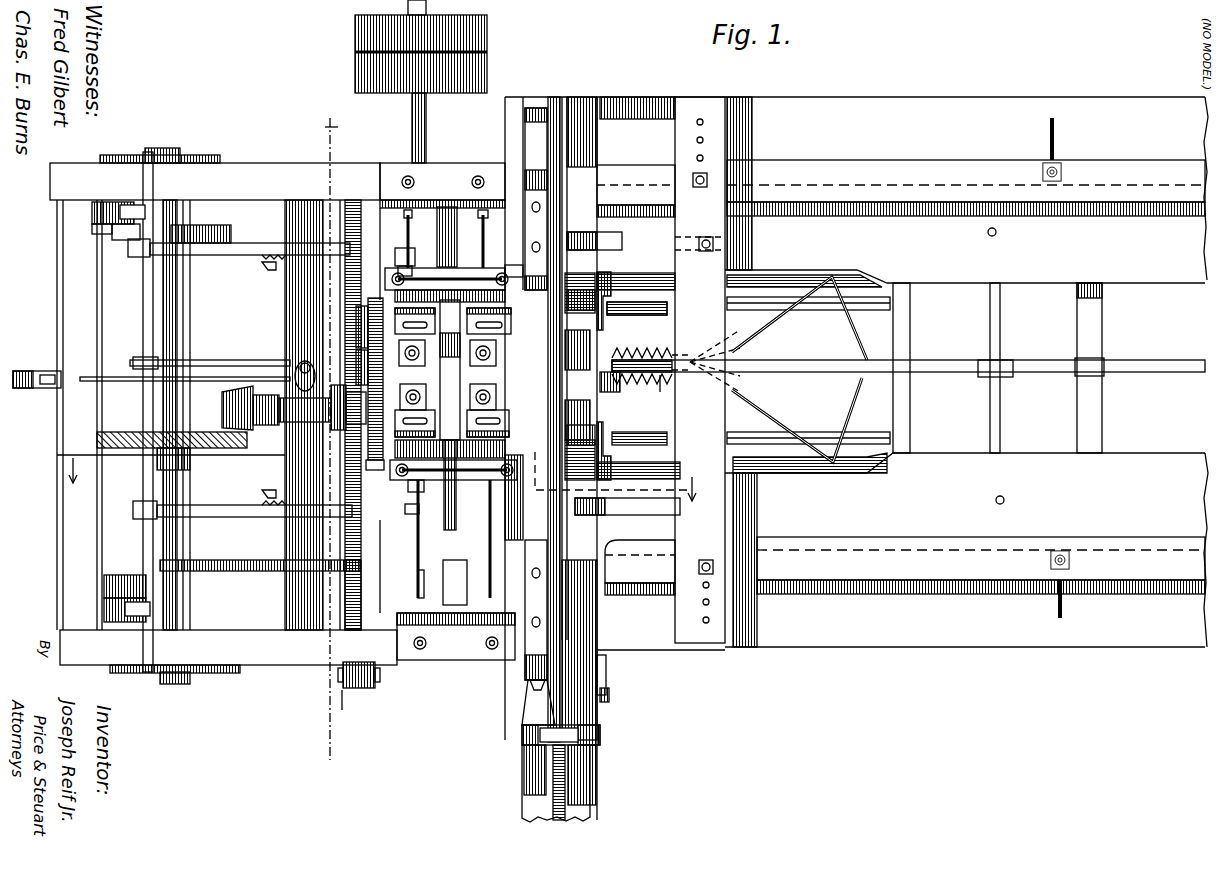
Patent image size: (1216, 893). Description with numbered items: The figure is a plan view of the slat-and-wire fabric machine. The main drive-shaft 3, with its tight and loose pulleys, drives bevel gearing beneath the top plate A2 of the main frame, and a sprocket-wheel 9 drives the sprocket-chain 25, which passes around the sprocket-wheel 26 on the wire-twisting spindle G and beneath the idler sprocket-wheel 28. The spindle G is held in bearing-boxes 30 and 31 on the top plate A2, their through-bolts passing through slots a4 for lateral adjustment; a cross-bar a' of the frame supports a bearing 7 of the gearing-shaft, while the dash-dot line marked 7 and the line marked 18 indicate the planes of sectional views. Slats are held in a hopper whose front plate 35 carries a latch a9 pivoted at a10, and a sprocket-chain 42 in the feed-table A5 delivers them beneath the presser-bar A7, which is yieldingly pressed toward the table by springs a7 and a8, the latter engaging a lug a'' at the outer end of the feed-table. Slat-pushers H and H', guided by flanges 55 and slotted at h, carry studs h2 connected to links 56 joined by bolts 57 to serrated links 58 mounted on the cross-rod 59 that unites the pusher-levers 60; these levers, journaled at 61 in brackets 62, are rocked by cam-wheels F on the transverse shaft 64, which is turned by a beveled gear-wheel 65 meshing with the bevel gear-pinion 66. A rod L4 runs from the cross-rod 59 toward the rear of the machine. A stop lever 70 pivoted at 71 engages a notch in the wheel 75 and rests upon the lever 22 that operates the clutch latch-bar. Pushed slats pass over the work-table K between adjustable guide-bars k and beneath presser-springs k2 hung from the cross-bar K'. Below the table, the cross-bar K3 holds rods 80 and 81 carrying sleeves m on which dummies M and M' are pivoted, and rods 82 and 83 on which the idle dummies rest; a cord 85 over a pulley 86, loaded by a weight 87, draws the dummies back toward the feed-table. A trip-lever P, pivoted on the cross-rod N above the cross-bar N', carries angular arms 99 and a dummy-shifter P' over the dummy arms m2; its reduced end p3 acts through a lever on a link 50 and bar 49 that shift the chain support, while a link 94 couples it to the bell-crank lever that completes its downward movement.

The work-table K is at (966, 354).
The guide-bars k is at (989, 368).
The rod 83 is at (865, 275).
The rod 81 is at (823, 311).
The rod 80 is at (828, 432).
The rod 82 is at (778, 474).
The angular arm 99 is at (776, 330).
The trip-lever P is at (908, 356).
The cross-bar K3 is at (912, 428).
The cross-rod N is at (1006, 368).
The cross-bar N' is at (1101, 368).
The cross-bar K' is at (700, 370).
The section line 18 is at (379, 479).
The main drive-shaft 3 is at (430, 131).
The pivot 71 is at (380, 678).
The bearing 7 is at (297, 368).
The cross-rod 59 is at (146, 490).
The transverse shaft 64 is at (178, 319).
The pusher-levers 60 is at (128, 205).
The brackets 62 is at (100, 236).
The journal 61 is at (107, 236).
The cam-wheel F is at (226, 236).
The link 58 is at (232, 255).
The bolt 57 is at (268, 271).
The rod L4 is at (205, 362).
The cord 85 is at (210, 381).
The beveled gear-wheel 65 is at (226, 450).
The beveled gear-pinion 66 is at (244, 392).
The wheel 75 is at (350, 370).
The sprocket-chain 25 is at (366, 312).
The idler sprocket-wheel 28 is at (366, 345).
The weight 87 is at (22, 370).
The pulley 86 is at (38, 390).
The lever 22 is at (270, 572).
The lever 70 is at (358, 594).
The link 56 is at (380, 513).
The sprocket-wheel 26 is at (381, 470).
The bearing-box 30 is at (415, 372).
The bearing-box 31 is at (489, 372).
The cross-bar a' is at (450, 370).
The wire-twisting spindle G is at (455, 440).
The slots h is at (465, 276).
The slat-pusher H is at (468, 490).
The stud h2 is at (412, 247).
The flanges 55 is at (497, 268).
The slat-pusher H' is at (526, 272).
The slots a4 is at (498, 546).
The top plate A2 is at (490, 592).
The lug or bracket a'' is at (542, 178).
The spring a8 is at (530, 143).
The spring a7 is at (540, 610).
The latch a9 is at (538, 702).
The pivot a10 is at (577, 720).
The presser-bar A7 is at (561, 376).
The feed-table A5 is at (592, 782).
The sprocket-chain 42 is at (553, 789).
The front plate 35 is at (578, 738).
The rod or pitman 50 is at (606, 672).
The bar 49 is at (610, 695).
The presser-springs k2 is at (623, 373).
The dummy M' is at (614, 293).
The dummy M is at (620, 459).
The sprocket-wheel 9 is at (566, 329).
The sleeves m is at (637, 315).
The projecting arm m2 is at (642, 378).
The dummy-shifter P' is at (621, 389).
The link 94 is at (660, 393).
The reduced end p3 is at (574, 382).